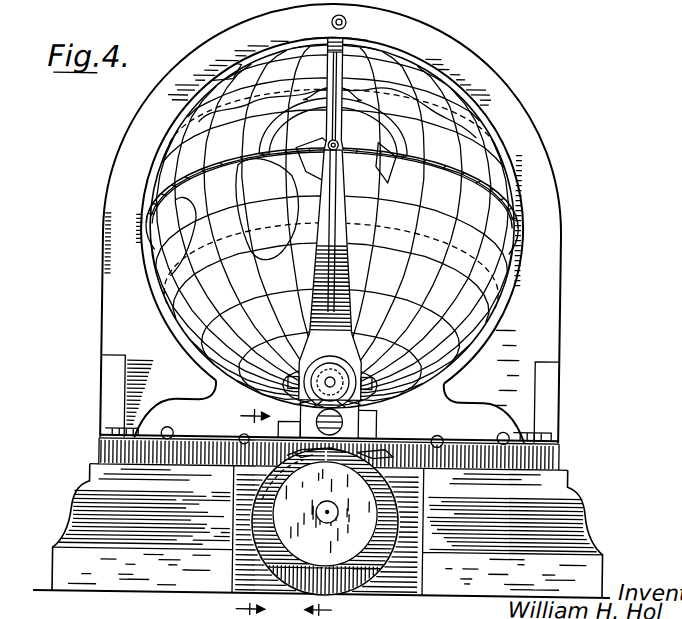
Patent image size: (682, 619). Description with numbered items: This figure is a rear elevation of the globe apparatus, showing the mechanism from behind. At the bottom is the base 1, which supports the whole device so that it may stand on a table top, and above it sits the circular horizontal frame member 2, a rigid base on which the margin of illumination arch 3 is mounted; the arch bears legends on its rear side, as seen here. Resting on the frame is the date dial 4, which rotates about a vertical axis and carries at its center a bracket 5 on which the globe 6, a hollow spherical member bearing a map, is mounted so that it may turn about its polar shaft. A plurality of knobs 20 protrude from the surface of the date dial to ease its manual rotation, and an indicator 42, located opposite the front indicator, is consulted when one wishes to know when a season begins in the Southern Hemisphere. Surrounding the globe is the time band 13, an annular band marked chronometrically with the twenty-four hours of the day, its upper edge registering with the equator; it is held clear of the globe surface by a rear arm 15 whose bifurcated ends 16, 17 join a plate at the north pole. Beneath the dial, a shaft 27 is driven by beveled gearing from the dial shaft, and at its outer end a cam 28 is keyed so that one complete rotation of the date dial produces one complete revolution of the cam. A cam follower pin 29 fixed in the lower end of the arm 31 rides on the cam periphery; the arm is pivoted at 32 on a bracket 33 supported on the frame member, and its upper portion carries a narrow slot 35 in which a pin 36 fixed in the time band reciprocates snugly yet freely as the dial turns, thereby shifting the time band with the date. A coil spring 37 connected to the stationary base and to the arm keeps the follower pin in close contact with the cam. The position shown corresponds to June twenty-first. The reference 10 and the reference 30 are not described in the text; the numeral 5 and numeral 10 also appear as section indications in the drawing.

The base 1 is at (72, 514).
The circular horizontal frame member 2 is at (561, 461).
The margin of illumination arch 3 is at (559, 302).
The date dial 4 is at (441, 444).
The bracket 5 is at (293, 610).
The globe 6 is at (180, 306).
The section line 10- 10 is at (253, 408).
The time band 13 is at (387, 160).
The rear arm 15 is at (313, 64).
The bifurcated end 16 is at (402, 126).
The bifurcated end 17 is at (255, 131).
The knobs 20 is at (169, 430).
The shaft 27 is at (339, 506).
The cam 28 is at (367, 550).
The cam follower pin 29 is at (258, 507).
The column 30 is at (320, 198).
The arm 31 is at (300, 452).
The pivot 32 is at (325, 376).
The bracket 33 is at (376, 427).
The narrow slot 35 is at (335, 259).
The pin 36 is at (333, 147).
The coil spring 37 is at (391, 452).
The indicator 42 is at (340, 425).